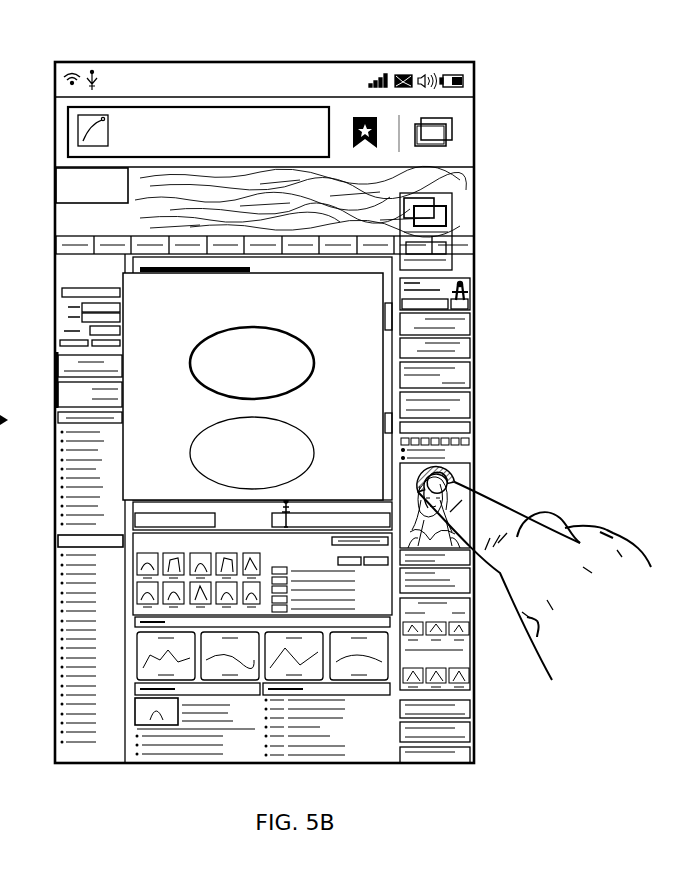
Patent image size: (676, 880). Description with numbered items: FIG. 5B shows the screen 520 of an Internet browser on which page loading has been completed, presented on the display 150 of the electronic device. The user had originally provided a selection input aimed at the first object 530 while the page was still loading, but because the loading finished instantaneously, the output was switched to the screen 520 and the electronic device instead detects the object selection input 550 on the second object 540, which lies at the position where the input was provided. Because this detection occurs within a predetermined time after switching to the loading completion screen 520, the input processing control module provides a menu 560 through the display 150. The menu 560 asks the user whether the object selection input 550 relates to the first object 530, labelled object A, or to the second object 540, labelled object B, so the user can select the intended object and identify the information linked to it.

The display 150 is at (262, 62).
The screen on which page loading has been completed 520 is at (482, 128).
The first object 530 is at (463, 593).
The second object 540 is at (470, 466).
The object selection input 550 is at (455, 476).
The menu 560 is at (360, 310).